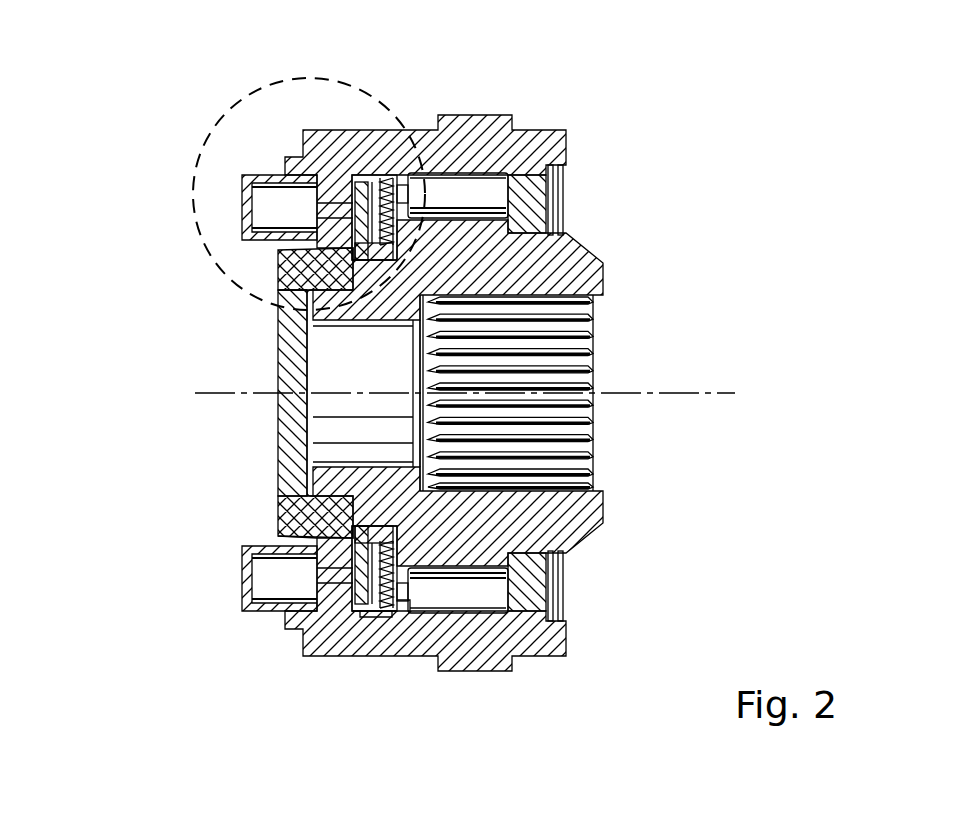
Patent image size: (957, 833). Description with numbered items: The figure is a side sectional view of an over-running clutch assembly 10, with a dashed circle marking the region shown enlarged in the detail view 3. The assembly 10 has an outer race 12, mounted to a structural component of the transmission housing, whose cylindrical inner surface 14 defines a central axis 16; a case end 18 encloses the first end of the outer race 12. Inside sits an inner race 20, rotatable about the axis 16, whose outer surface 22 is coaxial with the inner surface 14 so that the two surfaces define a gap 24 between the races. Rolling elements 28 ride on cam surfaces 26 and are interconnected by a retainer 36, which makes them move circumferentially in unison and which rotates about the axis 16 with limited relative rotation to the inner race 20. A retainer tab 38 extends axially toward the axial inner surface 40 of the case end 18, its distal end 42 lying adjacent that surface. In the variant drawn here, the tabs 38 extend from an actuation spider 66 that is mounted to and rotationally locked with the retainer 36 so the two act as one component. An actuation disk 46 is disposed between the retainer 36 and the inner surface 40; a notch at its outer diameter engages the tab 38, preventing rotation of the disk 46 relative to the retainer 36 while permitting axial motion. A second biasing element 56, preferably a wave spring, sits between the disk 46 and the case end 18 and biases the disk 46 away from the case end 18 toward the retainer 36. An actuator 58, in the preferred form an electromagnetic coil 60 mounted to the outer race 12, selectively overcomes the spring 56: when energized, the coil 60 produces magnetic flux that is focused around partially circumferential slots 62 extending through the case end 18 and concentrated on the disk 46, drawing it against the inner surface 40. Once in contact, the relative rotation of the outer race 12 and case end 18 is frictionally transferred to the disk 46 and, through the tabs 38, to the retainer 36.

The over-running clutch assembly 10 is at (230, 677).
The outer race 12 is at (543, 137).
The cylindrical inner surface 14 is at (383, 178).
The central axis 16 is at (622, 393).
The case end 18 is at (283, 165).
The inner race 20 is at (587, 260).
The outer surface 22 is at (443, 190).
The gap 24 is at (402, 176).
The cam surfaces 26 is at (372, 185).
The rolling elements 28 is at (490, 193).
The retainer 36 is at (403, 607).
The retainer tab 38 is at (365, 608).
The axial inner surface 40 is at (362, 200).
The distal end 42 is at (360, 195).
The actuation disk 46 is at (350, 567).
The second biasing element 56 is at (282, 303).
The actuator 58 is at (265, 207).
The electromagnetic coil 60 is at (198, 375).
The partially circumferential slots 62 is at (272, 300).
The actuation spider 66 is at (548, 550).
The detail circle FIG. 3 is at (197, 220).